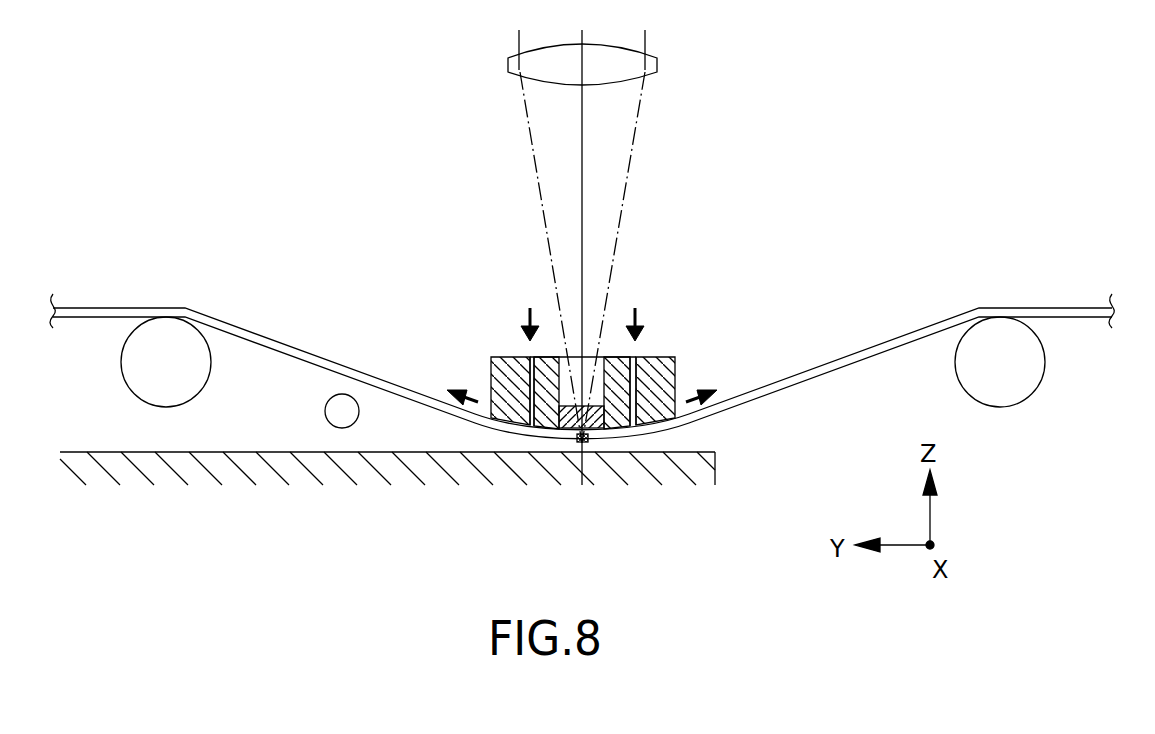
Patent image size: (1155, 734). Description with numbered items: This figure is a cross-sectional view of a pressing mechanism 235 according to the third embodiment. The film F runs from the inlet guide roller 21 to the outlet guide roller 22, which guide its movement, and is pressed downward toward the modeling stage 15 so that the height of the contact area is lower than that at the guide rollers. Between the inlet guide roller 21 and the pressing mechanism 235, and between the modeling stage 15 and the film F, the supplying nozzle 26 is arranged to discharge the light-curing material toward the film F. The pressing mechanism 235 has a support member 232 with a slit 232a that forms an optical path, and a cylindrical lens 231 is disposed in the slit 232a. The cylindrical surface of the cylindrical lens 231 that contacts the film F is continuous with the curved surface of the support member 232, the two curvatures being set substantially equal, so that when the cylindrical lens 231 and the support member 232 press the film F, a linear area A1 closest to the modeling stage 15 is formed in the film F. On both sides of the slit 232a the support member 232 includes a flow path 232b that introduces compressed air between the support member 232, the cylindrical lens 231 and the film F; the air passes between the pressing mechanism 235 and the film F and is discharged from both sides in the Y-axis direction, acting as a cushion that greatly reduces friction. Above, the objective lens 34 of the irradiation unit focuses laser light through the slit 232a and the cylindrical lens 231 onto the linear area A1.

The modeling stage 15 is at (85, 458).
The inlet guide roller 21 is at (163, 340).
The outlet guide roller 22 is at (1005, 340).
The supplying nozzle 26 is at (343, 396).
The objective lens 34 is at (657, 63).
The cylindrical lens 231 is at (597, 444).
The support member 232 is at (601, 385).
The slit 232a is at (570, 357).
The flow path 232b is at (531, 362).
The pressing mechanism 235 is at (659, 300).
The linear area A1 is at (582, 450).
The film F is at (287, 345).